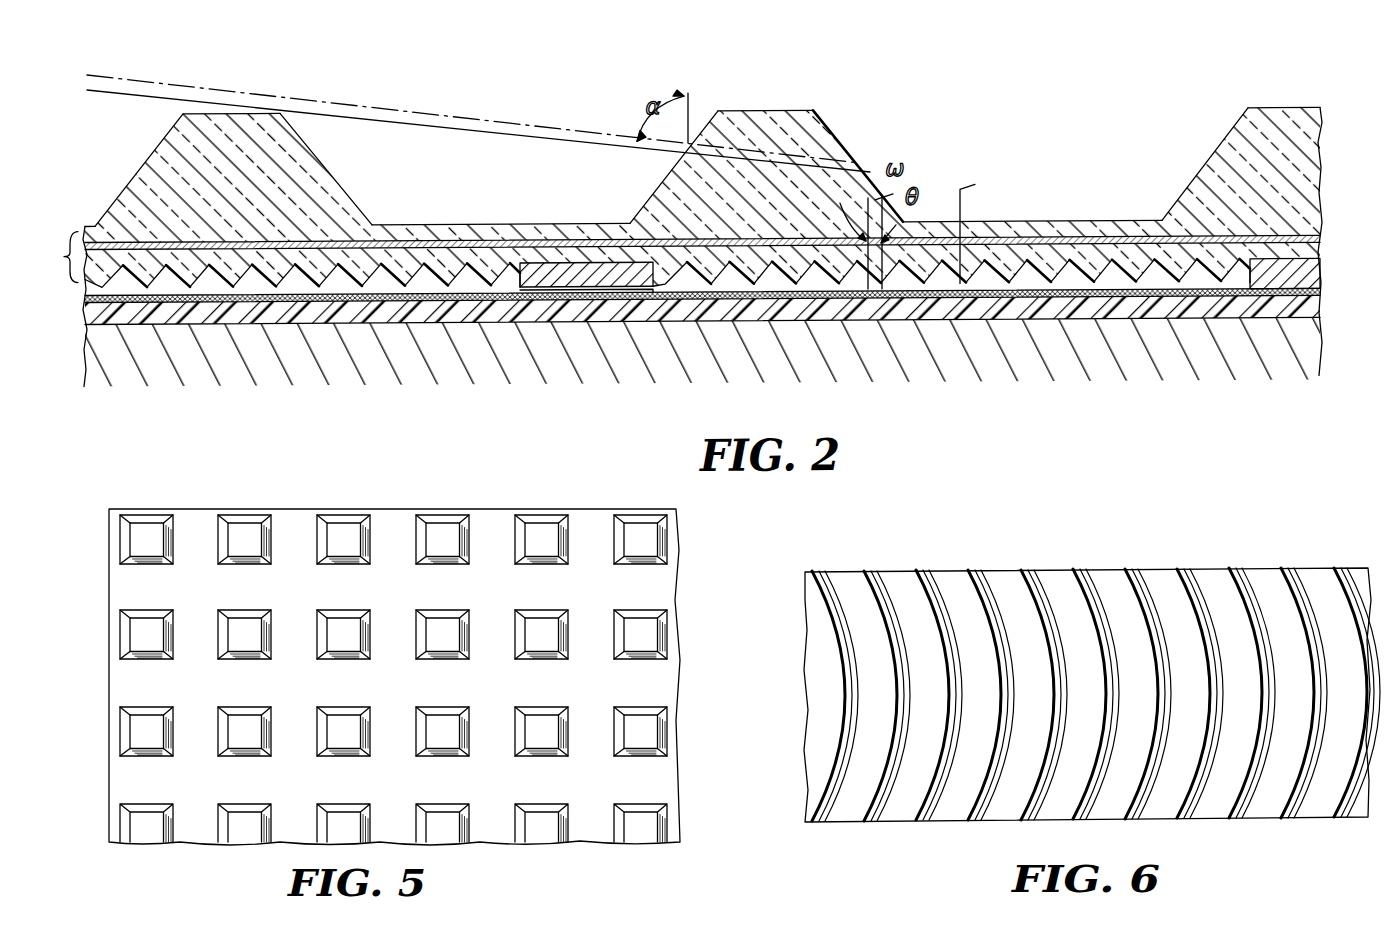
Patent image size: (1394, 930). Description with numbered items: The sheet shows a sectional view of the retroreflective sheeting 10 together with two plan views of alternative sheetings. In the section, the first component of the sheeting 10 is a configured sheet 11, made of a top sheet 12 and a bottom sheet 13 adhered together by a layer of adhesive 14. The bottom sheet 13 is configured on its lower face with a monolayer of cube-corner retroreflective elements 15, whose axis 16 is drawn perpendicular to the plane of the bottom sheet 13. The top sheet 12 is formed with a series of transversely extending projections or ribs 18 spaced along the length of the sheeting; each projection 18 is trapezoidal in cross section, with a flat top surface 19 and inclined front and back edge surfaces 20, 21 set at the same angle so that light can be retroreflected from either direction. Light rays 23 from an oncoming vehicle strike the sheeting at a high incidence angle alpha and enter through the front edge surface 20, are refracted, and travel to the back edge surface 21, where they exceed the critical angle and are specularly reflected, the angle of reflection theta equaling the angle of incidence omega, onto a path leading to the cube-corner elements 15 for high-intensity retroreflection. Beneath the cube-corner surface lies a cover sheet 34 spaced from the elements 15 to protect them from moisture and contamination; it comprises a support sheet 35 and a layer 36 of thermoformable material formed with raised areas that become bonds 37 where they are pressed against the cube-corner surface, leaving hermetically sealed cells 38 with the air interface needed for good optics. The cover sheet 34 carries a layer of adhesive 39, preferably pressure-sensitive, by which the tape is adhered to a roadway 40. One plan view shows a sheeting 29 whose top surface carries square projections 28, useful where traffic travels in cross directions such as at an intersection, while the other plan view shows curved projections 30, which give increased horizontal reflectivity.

In FIG. 2, the sheeting 10 is at (1127, 150).
In FIG. 2, the configured sheet 11 is at (598, 251).
In FIG. 2, the top sheet 12 is at (423, 229).
In FIG. 2, the bottom sheet 13 is at (458, 266).
In FIG. 2, the layer of adhesive 14 is at (507, 245).
In FIG. 2, the cube-corner retroreflective elements 15 is at (365, 281).
In FIG. 2, the axis of the cube-corner elements 16 is at (982, 223).
In FIG. 2, the projections or ribs 18 is at (788, 124).
In FIG. 2, the flat top surface 19 is at (750, 115).
In FIG. 2, the front edge surface 20 is at (653, 197).
In FIG. 2, the back edge surface 21 is at (842, 148).
In FIG. 2, the light rays 23 is at (148, 95).
In FIG. 5, the square projections 28 is at (321, 622).
In FIG. 5, the sheet 29 is at (292, 509).
In FIG. 6, the curved projections 30 is at (1027, 578).
In FIG. 2, the cover sheet 34 is at (84, 299).
In FIG. 2, the support sheet 35 is at (84, 326).
In FIG. 2, the layer of thermoformable material 36 is at (84, 306).
In FIG. 2, the bonds 37 is at (656, 292).
In FIG. 2, the hermetically sealed cells 38 is at (430, 287).
In FIG. 2, the layer of adhesive 39 is at (160, 316).
In FIG. 2, the roadway 40 is at (233, 374).